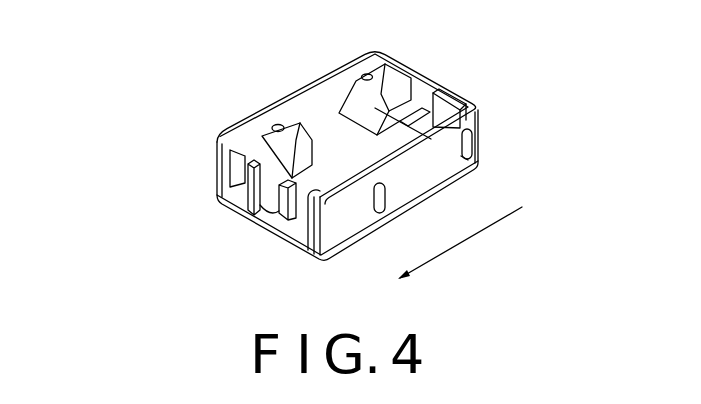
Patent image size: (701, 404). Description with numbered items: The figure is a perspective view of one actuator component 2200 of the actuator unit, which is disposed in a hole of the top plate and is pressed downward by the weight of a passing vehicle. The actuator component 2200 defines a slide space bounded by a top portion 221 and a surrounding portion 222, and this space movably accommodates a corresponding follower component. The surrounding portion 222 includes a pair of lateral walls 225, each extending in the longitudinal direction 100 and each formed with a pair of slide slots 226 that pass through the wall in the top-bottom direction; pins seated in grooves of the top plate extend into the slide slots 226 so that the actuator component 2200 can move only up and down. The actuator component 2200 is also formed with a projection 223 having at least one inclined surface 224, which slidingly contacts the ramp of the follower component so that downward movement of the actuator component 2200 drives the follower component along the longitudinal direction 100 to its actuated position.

The longitudinal direction 100 is at (453, 251).
The actuator component 2200 is at (185, 211).
The top portion 221 is at (330, 140).
The surrounding portion 222 is at (261, 105).
The projection 223 is at (436, 122).
The inclined surface 224 is at (278, 162).
The lateral wall 225 is at (339, 79).
The slide slot 226 is at (472, 146).